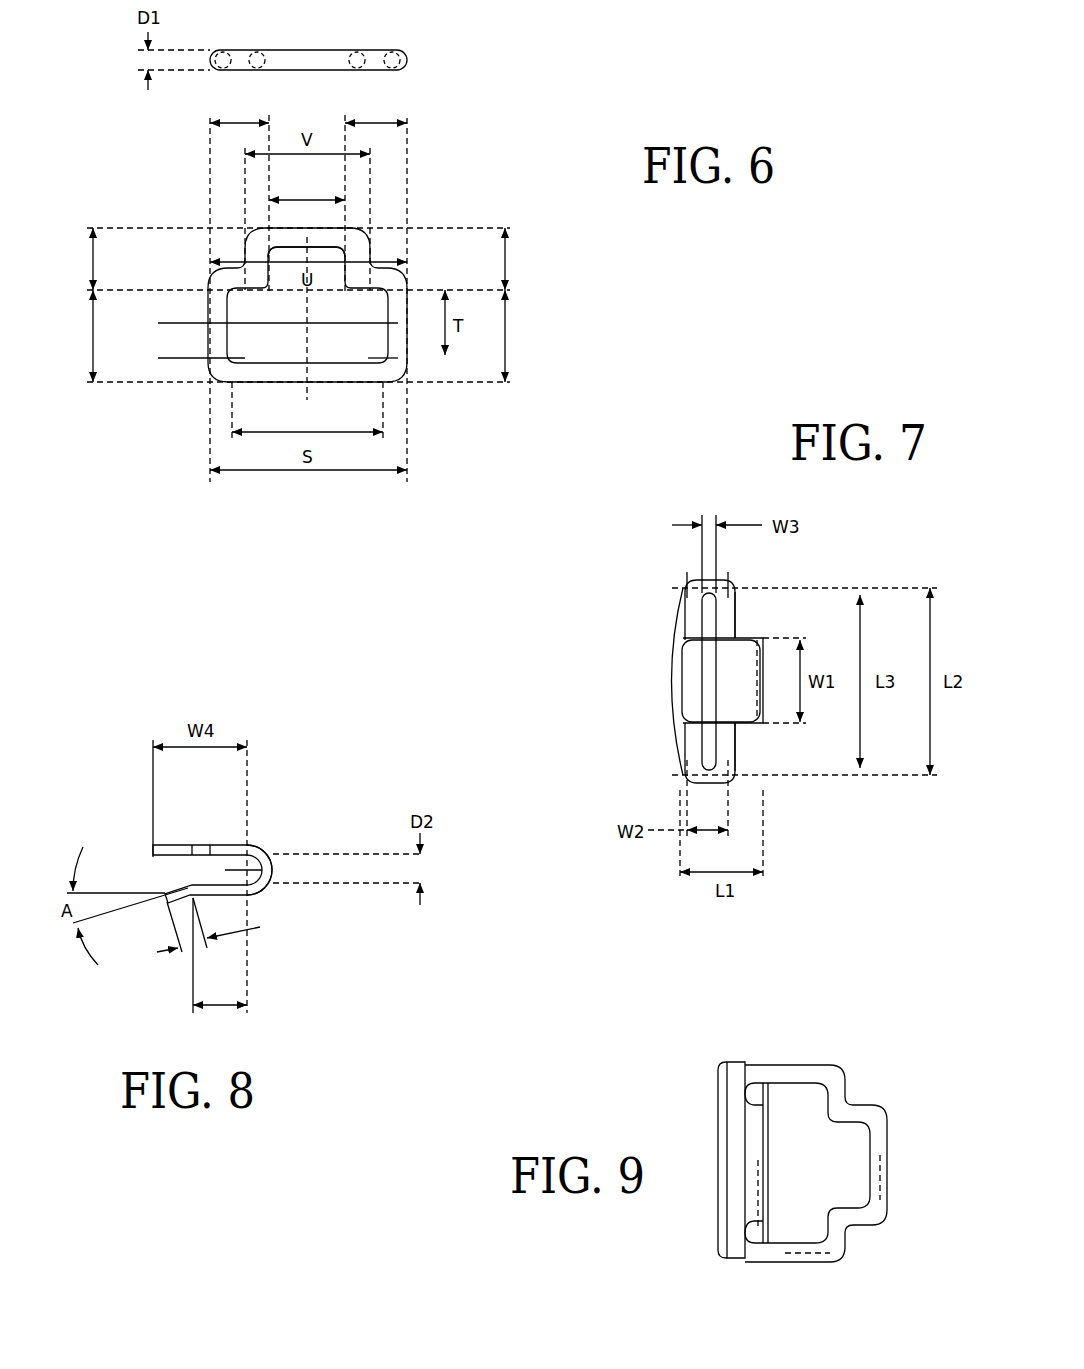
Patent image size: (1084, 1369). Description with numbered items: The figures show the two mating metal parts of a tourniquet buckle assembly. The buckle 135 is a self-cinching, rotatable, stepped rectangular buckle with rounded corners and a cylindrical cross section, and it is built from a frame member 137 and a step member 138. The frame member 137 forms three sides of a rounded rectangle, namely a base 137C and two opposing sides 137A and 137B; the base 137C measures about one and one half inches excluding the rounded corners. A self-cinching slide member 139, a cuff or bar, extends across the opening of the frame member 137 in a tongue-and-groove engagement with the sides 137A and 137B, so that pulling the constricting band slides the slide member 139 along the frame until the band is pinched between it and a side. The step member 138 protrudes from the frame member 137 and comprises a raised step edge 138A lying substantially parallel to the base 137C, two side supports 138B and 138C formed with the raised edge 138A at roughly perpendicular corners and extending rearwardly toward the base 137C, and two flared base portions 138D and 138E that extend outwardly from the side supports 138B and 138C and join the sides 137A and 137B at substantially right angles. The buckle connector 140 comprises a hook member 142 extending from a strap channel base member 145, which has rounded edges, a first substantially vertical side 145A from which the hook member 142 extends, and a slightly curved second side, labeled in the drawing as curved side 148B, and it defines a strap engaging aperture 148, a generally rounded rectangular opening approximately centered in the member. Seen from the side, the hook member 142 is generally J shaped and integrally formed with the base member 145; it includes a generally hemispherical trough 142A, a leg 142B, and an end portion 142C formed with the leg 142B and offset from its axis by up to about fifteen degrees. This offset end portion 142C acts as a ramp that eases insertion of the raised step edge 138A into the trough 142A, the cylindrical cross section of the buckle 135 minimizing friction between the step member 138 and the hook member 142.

In FIG. 6, the buckle 135 is at (100, 150).
In FIG. 9, the buckle 135 is at (855, 1093).
In FIG. 6, the frame member 137 is at (215, 345).
In FIG. 6, the first side 137A is at (68, 336).
In FIG. 6, the second side 137B is at (530, 336).
In FIG. 6, the base 137C is at (307, 420).
In FIG. 6, the step member 138 is at (247, 250).
In FIG. 6, the raised step edge 138A is at (307, 188).
In FIG. 6, the side support 138B is at (68, 259).
In FIG. 6, the side support 138C is at (530, 259).
In FIG. 6, the flared base portion 138D is at (239, 112).
In FIG. 6, the flared base portion 138E is at (376, 112).
In FIG. 9, the self-cinching slide member 139 is at (710, 1132).
In FIG. 7, the buckle connector 140 is at (607, 550).
In FIG. 8, the buckle connector 140 is at (100, 776).
In FIG. 7, the hook member 142 is at (723, 702).
In FIG. 8, the trough 142A is at (265, 880).
In FIG. 8, the leg 142B is at (190, 1005).
In FIG. 8, the end portion 142C is at (260, 927).
In FIG. 7, the strap channel base member 145 is at (678, 725).
In FIG. 8, the strap channel base member 145 is at (200, 840).
In FIG. 7, the first substantially vertical side 145A is at (735, 620).
In FIG. 7, the strap engaging aperture 148 is at (708, 622).
In FIG. 7, the curved outer surface 148B is at (672, 658).